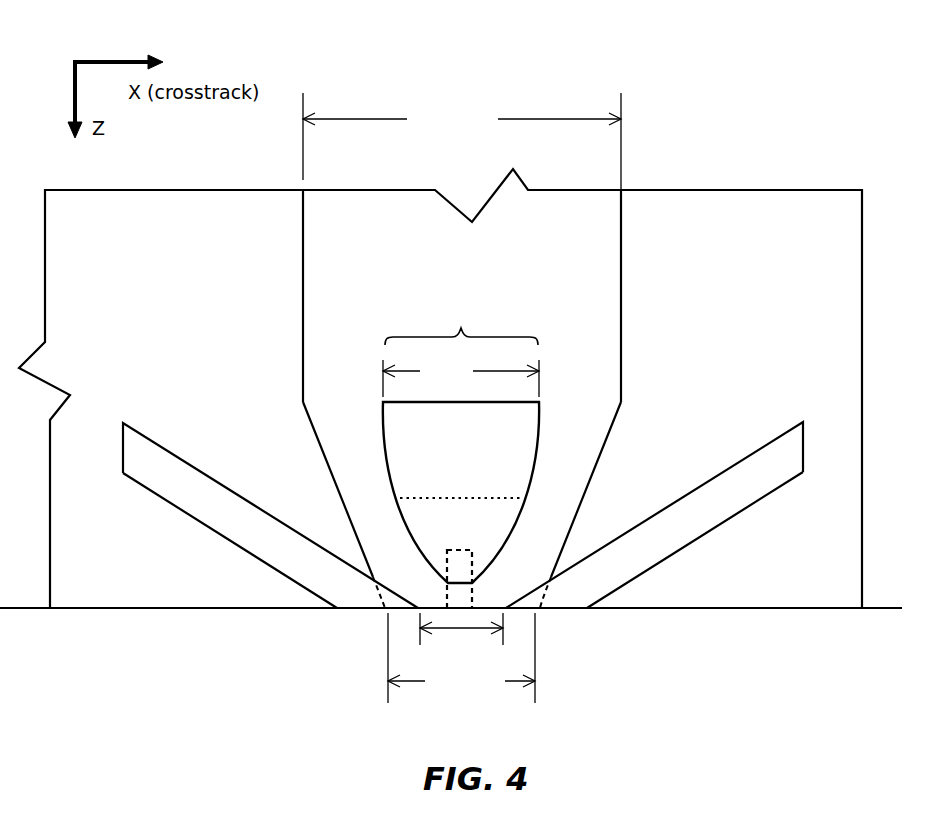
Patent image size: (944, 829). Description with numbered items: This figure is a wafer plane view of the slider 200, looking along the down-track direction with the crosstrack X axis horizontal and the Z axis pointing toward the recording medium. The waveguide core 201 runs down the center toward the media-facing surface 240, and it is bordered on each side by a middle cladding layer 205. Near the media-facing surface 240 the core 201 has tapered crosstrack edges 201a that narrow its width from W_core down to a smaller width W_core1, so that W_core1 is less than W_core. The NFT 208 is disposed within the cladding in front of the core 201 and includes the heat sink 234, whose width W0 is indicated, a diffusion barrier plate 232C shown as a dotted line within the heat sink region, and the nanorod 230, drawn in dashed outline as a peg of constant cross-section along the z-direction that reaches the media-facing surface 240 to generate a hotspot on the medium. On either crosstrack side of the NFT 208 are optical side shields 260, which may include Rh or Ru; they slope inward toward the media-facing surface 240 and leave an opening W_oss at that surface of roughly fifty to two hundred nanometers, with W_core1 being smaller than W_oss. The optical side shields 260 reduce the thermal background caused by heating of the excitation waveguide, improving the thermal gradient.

The slider 200 is at (772, 46).
The core 201 is at (355, 205).
The tapered crosstrack edges 201a is at (331, 477).
The middle cladding layer 205 is at (195, 200).
The NFT 208 is at (461, 324).
The nanorod 230 is at (450, 597).
The diffusion barrier plate 232C is at (500, 513).
The heat sink 234 is at (532, 422).
The media-facing surface 240 is at (780, 609).
The optical side shields 260 is at (207, 482).